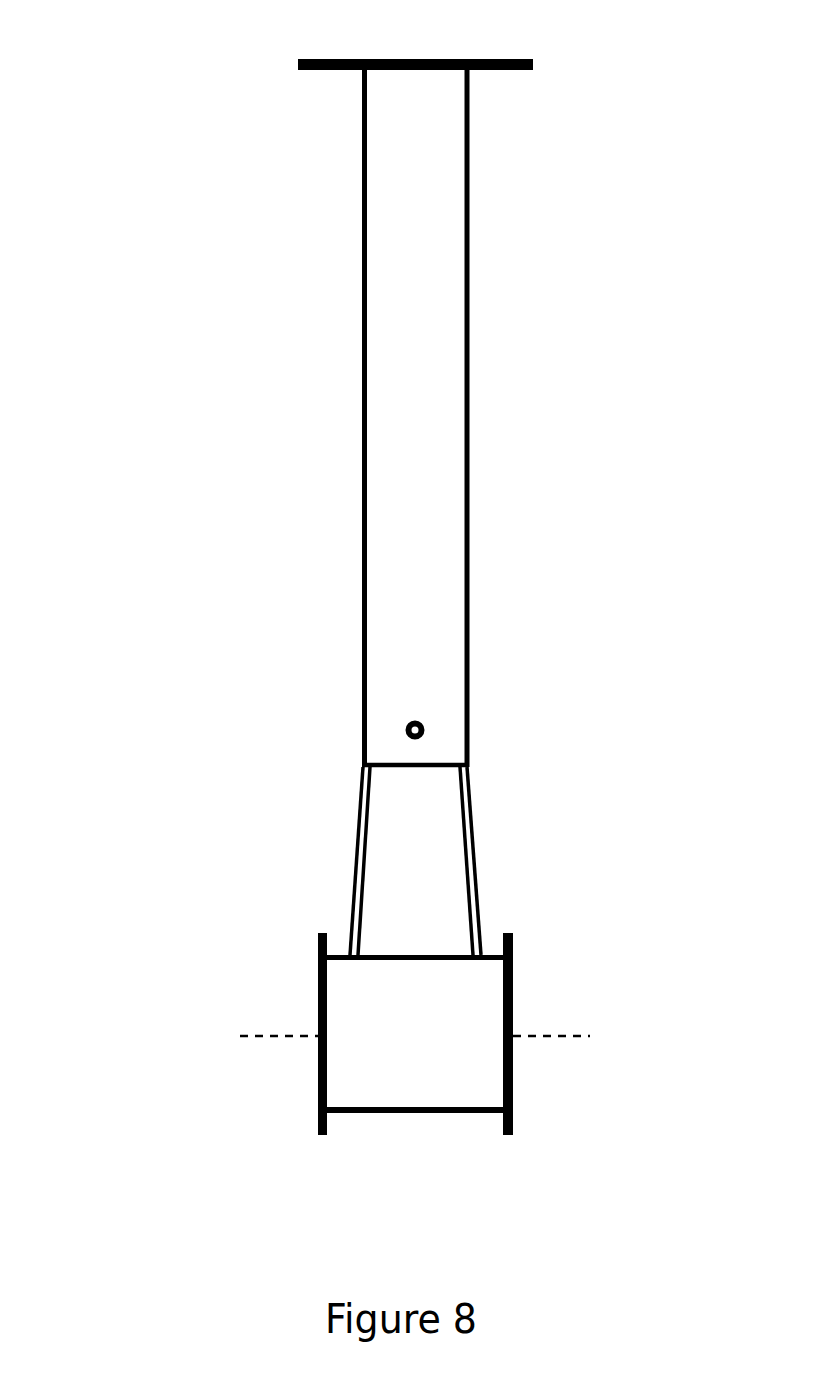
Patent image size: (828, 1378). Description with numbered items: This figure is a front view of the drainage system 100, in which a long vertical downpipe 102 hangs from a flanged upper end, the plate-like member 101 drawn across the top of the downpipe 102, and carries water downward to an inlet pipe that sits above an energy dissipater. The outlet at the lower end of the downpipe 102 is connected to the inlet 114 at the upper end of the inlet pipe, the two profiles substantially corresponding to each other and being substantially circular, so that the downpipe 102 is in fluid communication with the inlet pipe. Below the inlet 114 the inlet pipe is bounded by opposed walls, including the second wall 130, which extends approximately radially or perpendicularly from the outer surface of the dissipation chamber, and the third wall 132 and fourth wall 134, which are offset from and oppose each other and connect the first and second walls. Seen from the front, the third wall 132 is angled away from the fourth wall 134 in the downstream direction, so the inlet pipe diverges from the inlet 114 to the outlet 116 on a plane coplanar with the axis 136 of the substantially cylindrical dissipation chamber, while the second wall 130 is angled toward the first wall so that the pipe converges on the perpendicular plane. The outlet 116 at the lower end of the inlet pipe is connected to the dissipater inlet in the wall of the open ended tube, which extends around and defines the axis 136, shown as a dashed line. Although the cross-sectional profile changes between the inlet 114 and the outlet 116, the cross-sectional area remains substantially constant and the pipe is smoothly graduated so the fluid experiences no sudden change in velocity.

The drainage system 100 is at (245, 50).
The top plate 101 is at (512, 72).
The downpipe 102 is at (467, 493).
The inlet 114 is at (442, 762).
The outlet 116 is at (427, 955).
The second wall 130 is at (398, 822).
The third wall 132 is at (345, 942).
The fourth wall 134 is at (484, 942).
The axis 136 is at (258, 1035).